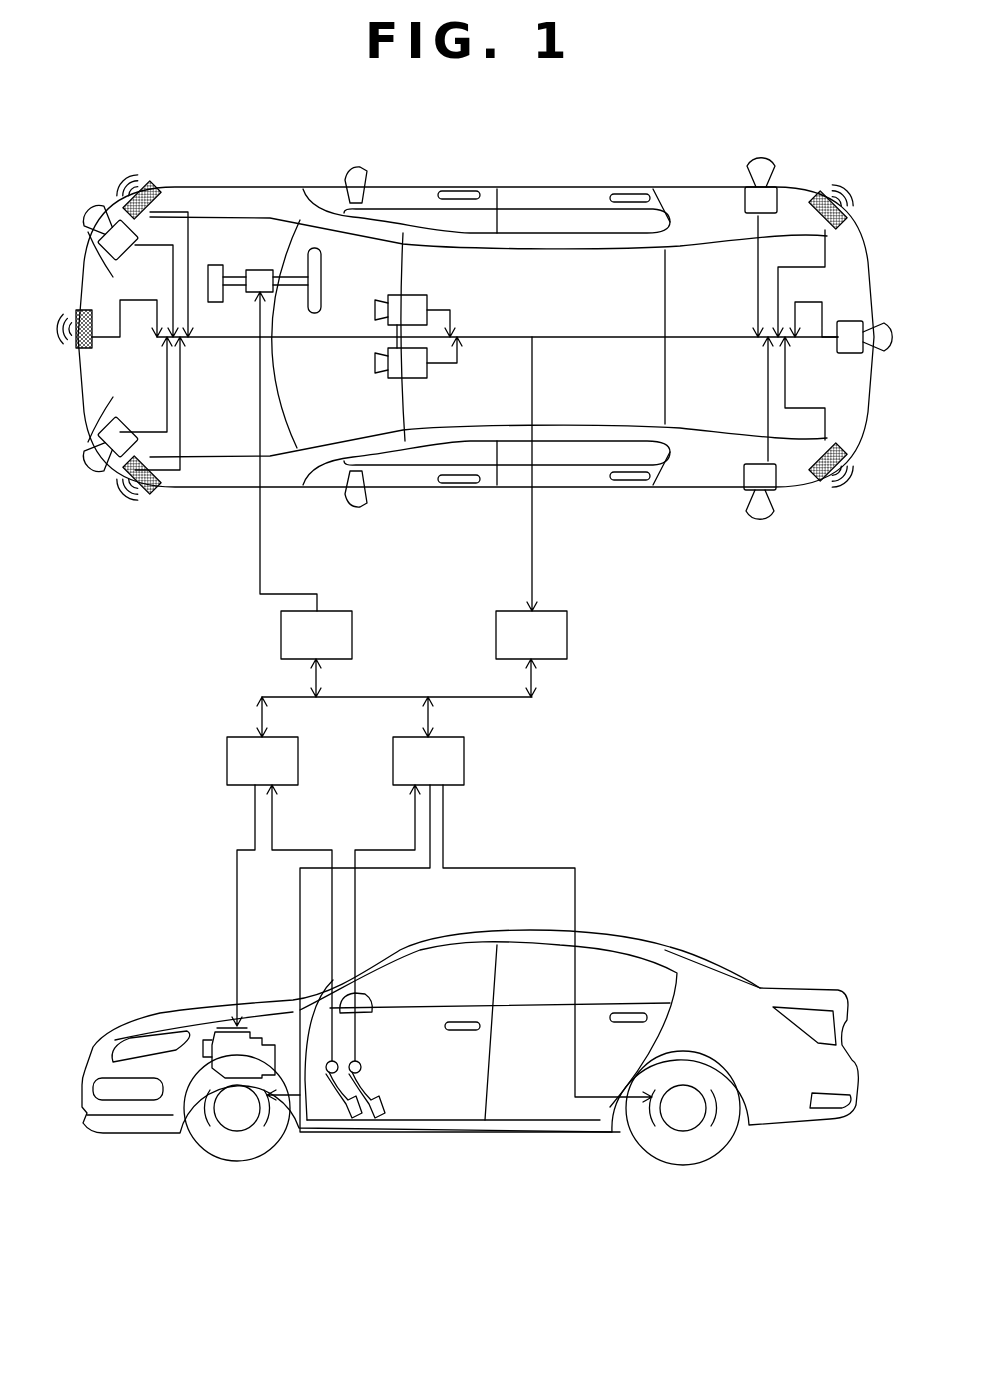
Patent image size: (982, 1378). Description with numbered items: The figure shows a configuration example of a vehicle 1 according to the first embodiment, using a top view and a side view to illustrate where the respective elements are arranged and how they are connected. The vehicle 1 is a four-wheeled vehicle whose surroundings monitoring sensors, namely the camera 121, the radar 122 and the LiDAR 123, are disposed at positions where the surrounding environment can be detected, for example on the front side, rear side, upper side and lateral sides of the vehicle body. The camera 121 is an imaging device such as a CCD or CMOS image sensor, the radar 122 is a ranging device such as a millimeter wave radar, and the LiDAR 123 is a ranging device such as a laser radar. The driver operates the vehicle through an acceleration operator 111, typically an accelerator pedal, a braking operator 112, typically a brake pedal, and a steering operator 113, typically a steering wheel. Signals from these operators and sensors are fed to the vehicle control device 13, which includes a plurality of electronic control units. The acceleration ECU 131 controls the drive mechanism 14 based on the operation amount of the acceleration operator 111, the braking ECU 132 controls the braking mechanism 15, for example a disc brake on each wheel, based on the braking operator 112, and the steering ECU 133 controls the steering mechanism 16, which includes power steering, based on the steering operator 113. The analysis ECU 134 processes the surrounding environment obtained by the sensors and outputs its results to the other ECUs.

The vehicle 1 is at (691, 136).
The vehicle control device 13 is at (608, 602).
The drive mechanism 14 is at (213, 1036).
The braking mechanism 15 is at (237, 1131).
The steering mechanism 16 is at (261, 268).
The acceleration operator 111 is at (357, 1118).
The braking operator 112 is at (380, 1118).
The steering operator 113 is at (321, 260).
The camera 121 is at (427, 296).
The radar 122 is at (150, 186).
The LiDAR 123 is at (112, 222).
The acceleration ECU 131 is at (245, 774).
The braking ECU 132 is at (411, 774).
The steering ECU 133 is at (299, 648).
The analysis ECU 134 is at (514, 648).